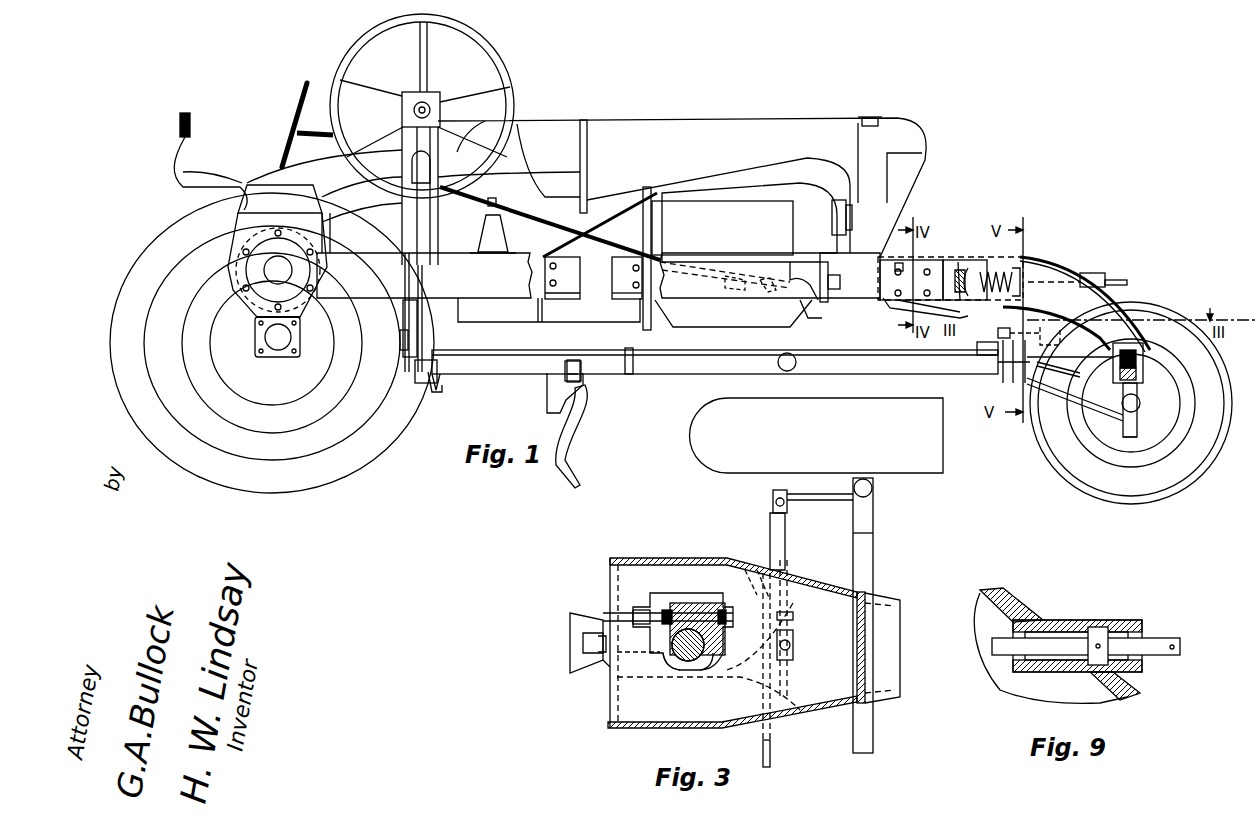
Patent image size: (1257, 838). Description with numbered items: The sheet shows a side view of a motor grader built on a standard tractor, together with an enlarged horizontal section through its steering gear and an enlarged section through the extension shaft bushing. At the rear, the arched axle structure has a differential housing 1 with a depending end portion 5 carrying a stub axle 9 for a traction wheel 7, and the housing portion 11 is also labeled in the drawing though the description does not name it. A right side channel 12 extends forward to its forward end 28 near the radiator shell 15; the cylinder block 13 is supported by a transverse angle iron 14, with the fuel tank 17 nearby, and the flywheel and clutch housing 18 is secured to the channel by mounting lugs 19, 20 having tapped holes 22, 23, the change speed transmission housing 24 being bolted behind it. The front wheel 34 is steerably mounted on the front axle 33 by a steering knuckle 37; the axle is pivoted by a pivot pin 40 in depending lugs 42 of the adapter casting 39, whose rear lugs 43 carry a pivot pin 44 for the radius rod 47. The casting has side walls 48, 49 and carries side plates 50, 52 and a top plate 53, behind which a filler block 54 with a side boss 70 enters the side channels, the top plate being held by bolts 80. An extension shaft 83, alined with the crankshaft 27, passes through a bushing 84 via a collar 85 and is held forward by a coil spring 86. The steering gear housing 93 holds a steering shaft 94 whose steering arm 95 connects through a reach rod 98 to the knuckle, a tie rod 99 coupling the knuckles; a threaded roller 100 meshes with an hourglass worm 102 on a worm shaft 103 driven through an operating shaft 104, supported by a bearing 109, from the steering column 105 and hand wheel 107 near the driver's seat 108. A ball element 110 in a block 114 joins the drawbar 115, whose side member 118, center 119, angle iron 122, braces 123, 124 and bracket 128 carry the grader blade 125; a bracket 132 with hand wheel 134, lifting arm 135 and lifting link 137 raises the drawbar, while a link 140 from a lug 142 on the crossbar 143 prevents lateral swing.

In FIG. 1, the differential housing 1 is at (225, 270).
In FIG. 1, the depending end portion 5 is at (238, 230).
In FIG. 1, the traction wheel 7 is at (405, 438).
In FIG. 1, the stub axle 9 is at (255, 338).
In FIG. 1, the housing lower portion 11 is at (313, 306).
In FIG. 1, the side channel 12 is at (392, 302).
In FIG. 1, the cylinder block 13 is at (823, 306).
In FIG. 1, the transverse angle iron 14 is at (802, 318).
In FIG. 1, the radiator shell 15 is at (895, 131).
In FIG. 1, the fuel tank 17 is at (556, 122).
In FIG. 1, the flywheel and clutch housing 18 is at (577, 322).
In FIG. 1, the mounting lug 19 is at (555, 296).
In FIG. 1, the mounting lug 20 is at (630, 298).
In FIG. 1, the tapped holes 22 is at (573, 267).
In FIG. 1, the tapped holes 23 is at (610, 283).
In FIG. 1, the change speed transmission housing 24 is at (485, 322).
In FIG. 1, the crankshaft 27 is at (802, 265).
In FIG. 1, the forward end of side channels 28 is at (963, 271).
In FIG. 1, the front axle 33 is at (1139, 395).
In FIG. 3, the front axle 33 is at (875, 575).
In FIG. 1, the front wheel 34 is at (1205, 470).
In FIG. 3, the steering knuckle 37 is at (874, 502).
In FIG. 1, the casting 39 is at (1005, 333).
In FIG. 3, the casting 39 is at (612, 692).
In FIG. 1, the pivot pin 40 is at (1145, 362).
In FIG. 1, the depending lugs 42 is at (1136, 377).
In FIG. 1, the depending lugs 43 is at (997, 378).
In FIG. 1, the pivot pin 44 is at (992, 368).
In FIG. 1, the radius rod 47 is at (1053, 395).
In FIG. 3, the side wall 48 is at (680, 560).
In FIG. 3, the side wall 49 is at (660, 732).
In FIG. 3, the side plate 50 is at (823, 587).
In FIG. 9, the side plate 50 is at (998, 690).
In FIG. 3, the side plate 52 is at (815, 712).
In FIG. 1, the top plate 53 is at (878, 256).
In FIG. 3, the top plate 53 is at (860, 662).
In FIG. 9, the top plate 53 is at (1020, 600).
In FIG. 1, the filler block 54 is at (967, 263).
In FIG. 1, the side boss 70 is at (955, 282).
In FIG. 1, the bolts 80 is at (920, 252).
In FIG. 1, the extension shaft 83 is at (1112, 283).
In FIG. 9, the extension shaft 83 is at (1175, 640).
In FIG. 1, the bushing 84 is at (1097, 279).
In FIG. 9, the bushing 84 is at (1075, 620).
In FIG. 9, the collar 85 is at (1098, 674).
In FIG. 1, the coil spring 86 is at (992, 268).
In FIG. 1, the steering gear housing 93 is at (1055, 318).
In FIG. 3, the steering gear housing 93 is at (684, 672).
In FIG. 3, the steering shaft 94 is at (668, 660).
In FIG. 1, the steering arm 95 is at (1070, 370).
In FIG. 3, the steering arm 95 is at (727, 664).
In FIG. 1, the reach rod 98 is at (1121, 379).
In FIG. 3, the reach rod 98 is at (793, 628).
In FIG. 3, the tie rod 99 is at (770, 748).
In FIG. 3, the threaded roller 100 is at (693, 596).
In FIG. 3, the hourglass worm 102 is at (688, 595).
In FIG. 3, the worm shaft 103 is at (637, 633).
In FIG. 1, the operating shaft 104 is at (898, 312).
In FIG. 1, the steering column 105 is at (491, 201).
In FIG. 1, the hand wheel 107 is at (296, 98).
In FIG. 1, the driver's seat 108 is at (210, 161).
In FIG. 1, the bearing 109 is at (750, 272).
In FIG. 3, the ball element 110 is at (602, 668).
In FIG. 3, the block 114 is at (578, 640).
In FIG. 1, the drawbar 115 is at (718, 378).
In FIG. 3, the drawbar 115 is at (574, 660).
In FIG. 1, the side member 118 is at (492, 374).
In FIG. 1, the center 119 is at (570, 352).
In FIG. 1, the transverse angle iron 122 is at (436, 386).
In FIG. 1, the angle iron brace 123 is at (636, 353).
In FIG. 1, the tubular brace 124 is at (784, 357).
In FIG. 1, the grader blade 125 is at (578, 428).
In FIG. 1, the upstanding bracket 128 is at (547, 410).
In FIG. 1, the bracket 132 is at (478, 250).
In FIG. 1, the hand wheel 134 is at (505, 80).
In FIG. 1, the lifting arm 135 is at (408, 134).
In FIG. 1, the lifting link 137 is at (417, 286).
In FIG. 1, the link 140 is at (418, 376).
In FIG. 1, the lug 142 is at (400, 347).
In FIG. 1, the crossbar 143 is at (384, 300).